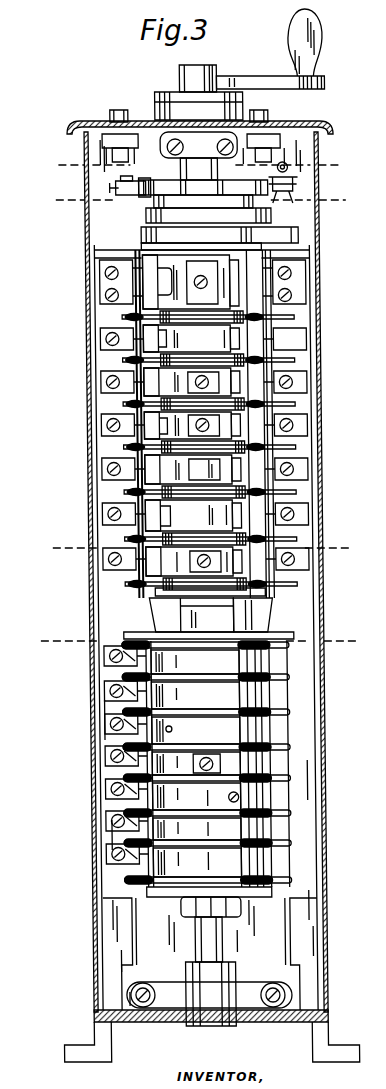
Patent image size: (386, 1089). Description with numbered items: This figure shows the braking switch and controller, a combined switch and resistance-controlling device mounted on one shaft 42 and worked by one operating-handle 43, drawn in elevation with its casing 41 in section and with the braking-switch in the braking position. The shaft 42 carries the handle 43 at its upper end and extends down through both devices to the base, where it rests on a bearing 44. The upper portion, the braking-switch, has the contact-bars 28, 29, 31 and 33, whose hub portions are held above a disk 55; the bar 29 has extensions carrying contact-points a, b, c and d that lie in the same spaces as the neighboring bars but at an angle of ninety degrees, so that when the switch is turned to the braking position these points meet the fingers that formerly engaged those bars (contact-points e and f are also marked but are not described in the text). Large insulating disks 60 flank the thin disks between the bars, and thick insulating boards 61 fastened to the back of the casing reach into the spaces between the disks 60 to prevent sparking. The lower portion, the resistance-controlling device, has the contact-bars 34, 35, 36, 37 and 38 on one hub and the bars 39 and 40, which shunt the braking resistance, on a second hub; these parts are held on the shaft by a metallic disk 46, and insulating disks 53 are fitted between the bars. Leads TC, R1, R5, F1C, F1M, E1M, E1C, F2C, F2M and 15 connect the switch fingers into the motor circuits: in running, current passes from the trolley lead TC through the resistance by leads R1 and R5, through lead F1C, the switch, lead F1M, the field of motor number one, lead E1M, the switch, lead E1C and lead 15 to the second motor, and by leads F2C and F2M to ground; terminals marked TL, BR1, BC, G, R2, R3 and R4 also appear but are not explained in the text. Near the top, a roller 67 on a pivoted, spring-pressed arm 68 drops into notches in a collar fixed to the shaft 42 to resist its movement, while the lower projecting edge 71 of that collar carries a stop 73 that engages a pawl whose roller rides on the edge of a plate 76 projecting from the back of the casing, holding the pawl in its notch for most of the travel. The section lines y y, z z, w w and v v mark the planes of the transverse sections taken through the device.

The casing 41 is at (318, 698).
The operating-handle 43 is at (255, 81).
The roller 67 is at (150, 180).
The pivoted arm 68 is at (120, 186).
The lower projecting edge of collar 71 is at (208, 216).
The stop or projection 73 is at (285, 200).
The plate 76 is at (215, 187).
The contact-bar 28 is at (228, 278).
The contact-bar 29 is at (191, 338).
The contact-bar 31 is at (192, 425).
The contact-bar 33 is at (176, 566).
The insulating disk 60 is at (252, 314).
The insulating sheet or board 61 is at (284, 339).
The lead 15 is at (140, 526).
The contact-point a is at (141, 292).
The contact-point b is at (141, 340).
The contact-point c is at (141, 383).
The contact-point d is at (141, 425).
The contact finger e is at (141, 468).
The contact finger f is at (166, 517).
The lead TC is at (98, 292).
The terminal TL is at (304, 292).
The terminal BR1 is at (110, 345).
The lead F1M is at (110, 390).
The lead F2M is at (110, 433).
The lead F1C is at (304, 385).
The lead F2C is at (304, 425).
The terminal BC is at (304, 469).
The terminal G is at (304, 514).
The lead E1C is at (110, 567).
The lead E1M is at (304, 565).
The lead R1 is at (98, 694).
The resistor terminal R2 is at (98, 727).
The resistor terminal R3 is at (98, 760).
The resistor terminal R4 is at (98, 793).
The lead R5 is at (110, 477).
The disk 55 is at (191, 615).
The metallic disk 46 is at (254, 615).
The insulating disk 53 is at (280, 711).
The contact-bar 34 is at (195, 662).
The contact-bar 35 is at (195, 695).
The contact-bar 36 is at (196, 730).
The contact-bar 37 is at (196, 763).
The contact-bar 38 is at (205, 796).
The contact-bar 39 is at (263, 836).
The contact-bar 40 is at (263, 864).
The shaft 42 is at (213, 947).
The bearing 44 is at (209, 995).
The section line y y is at (196, 165).
The section line z z is at (198, 200).
The section line w w is at (187, 548).
The section line v v is at (198, 641).